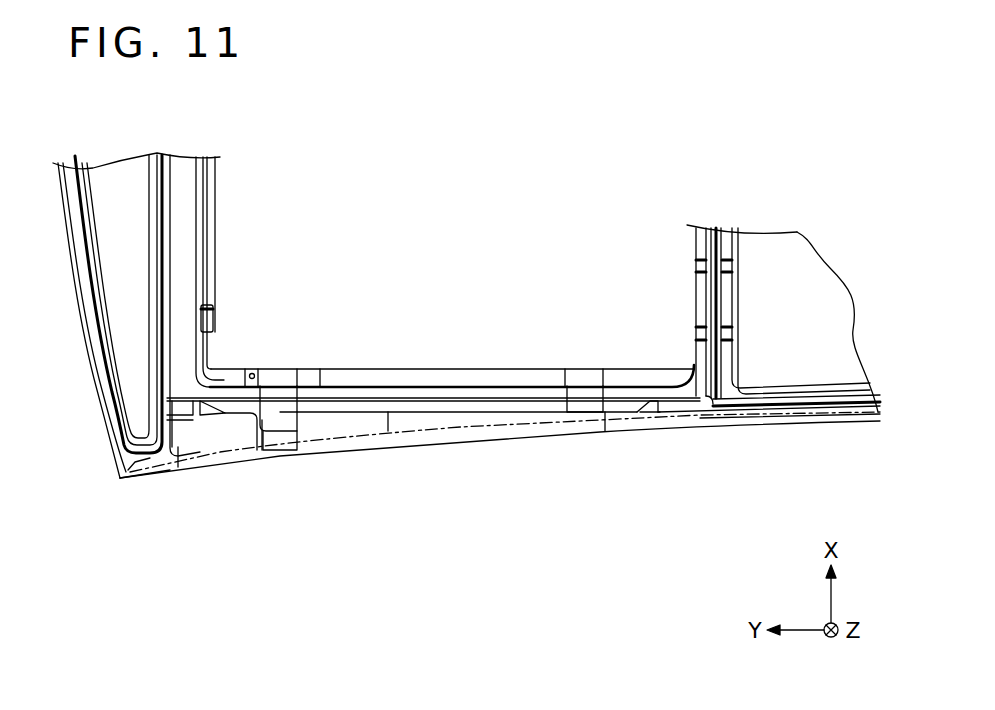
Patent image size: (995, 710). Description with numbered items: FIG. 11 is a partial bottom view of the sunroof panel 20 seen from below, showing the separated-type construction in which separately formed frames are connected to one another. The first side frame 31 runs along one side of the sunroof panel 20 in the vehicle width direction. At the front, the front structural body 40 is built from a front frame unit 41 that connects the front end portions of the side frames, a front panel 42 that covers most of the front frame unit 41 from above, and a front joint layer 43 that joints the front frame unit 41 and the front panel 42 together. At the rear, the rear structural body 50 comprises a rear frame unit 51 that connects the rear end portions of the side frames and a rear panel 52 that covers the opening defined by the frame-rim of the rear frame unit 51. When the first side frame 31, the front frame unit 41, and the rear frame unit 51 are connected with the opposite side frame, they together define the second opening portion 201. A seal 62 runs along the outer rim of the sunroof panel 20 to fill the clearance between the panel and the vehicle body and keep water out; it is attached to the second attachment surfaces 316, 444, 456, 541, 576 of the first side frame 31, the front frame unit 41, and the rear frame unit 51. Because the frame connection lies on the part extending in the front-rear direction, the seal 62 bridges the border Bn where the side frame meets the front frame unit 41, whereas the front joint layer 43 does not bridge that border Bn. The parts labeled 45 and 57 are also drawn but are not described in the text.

The sunroof panel 20 is at (767, 152).
The first side frame 31 is at (457, 367).
The front structural body 40 is at (83, 358).
The front frame unit 41 is at (133, 480).
The front panel 42 is at (117, 183).
The front joint layer 43 is at (90, 262).
The second attachment surface 444 is at (100, 425).
The front bracket 45 is at (228, 367).
The second attachment surface 456 is at (192, 463).
The rear structural body 50 is at (828, 424).
The rear frame unit 51 is at (763, 402).
The rear panel 52 is at (790, 248).
The second attachment surface 541 is at (792, 420).
The rear bracket 57 is at (643, 369).
The second attachment surface 576 is at (685, 423).
The seal 62 is at (388, 407).
The second opening portion 201 is at (655, 337).
The second attachment surface 316 is at (453, 440).
The border Bn is at (253, 436).